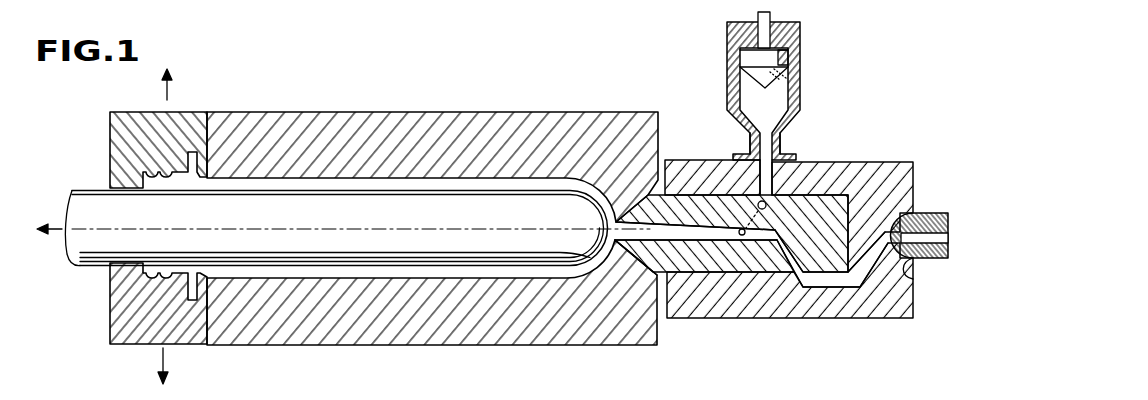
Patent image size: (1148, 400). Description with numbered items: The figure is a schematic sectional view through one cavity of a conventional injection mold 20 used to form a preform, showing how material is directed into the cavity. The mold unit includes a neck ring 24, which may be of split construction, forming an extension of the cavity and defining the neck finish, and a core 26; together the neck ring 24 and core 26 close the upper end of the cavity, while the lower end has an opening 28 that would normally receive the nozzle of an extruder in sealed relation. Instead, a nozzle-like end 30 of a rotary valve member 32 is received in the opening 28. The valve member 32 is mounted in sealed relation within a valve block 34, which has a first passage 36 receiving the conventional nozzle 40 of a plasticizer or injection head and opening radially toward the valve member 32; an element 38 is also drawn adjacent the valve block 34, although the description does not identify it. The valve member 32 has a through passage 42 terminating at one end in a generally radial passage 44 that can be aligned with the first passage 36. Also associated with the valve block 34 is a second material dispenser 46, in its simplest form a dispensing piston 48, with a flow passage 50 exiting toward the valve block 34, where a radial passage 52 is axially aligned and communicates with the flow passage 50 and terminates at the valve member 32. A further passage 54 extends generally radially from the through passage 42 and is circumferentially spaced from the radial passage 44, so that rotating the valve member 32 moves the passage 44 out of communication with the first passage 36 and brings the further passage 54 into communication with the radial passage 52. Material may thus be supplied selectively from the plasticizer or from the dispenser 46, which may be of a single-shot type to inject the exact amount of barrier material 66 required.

The injection mold 20 is at (451, 100).
The neck ring 24 is at (191, 119).
The core 26 is at (434, 250).
The opening 28 is at (623, 250).
The nozzle-like end 30 is at (644, 260).
The rotary valve member 32 is at (838, 202).
The valve block 34 is at (903, 162).
The first passage 36 is at (826, 290).
The sealing bead 38 is at (910, 280).
The nozzle 40 is at (935, 213).
The through passage 42 is at (704, 238).
The radial passage 44 is at (777, 253).
The second material dispenser 46 is at (795, 78).
The dispensing piston 48 is at (783, 55).
The flow passage 50 is at (777, 137).
The radial passage 52 is at (797, 183).
The further passage 54 is at (727, 190).
The barrier material 66 is at (772, 97).